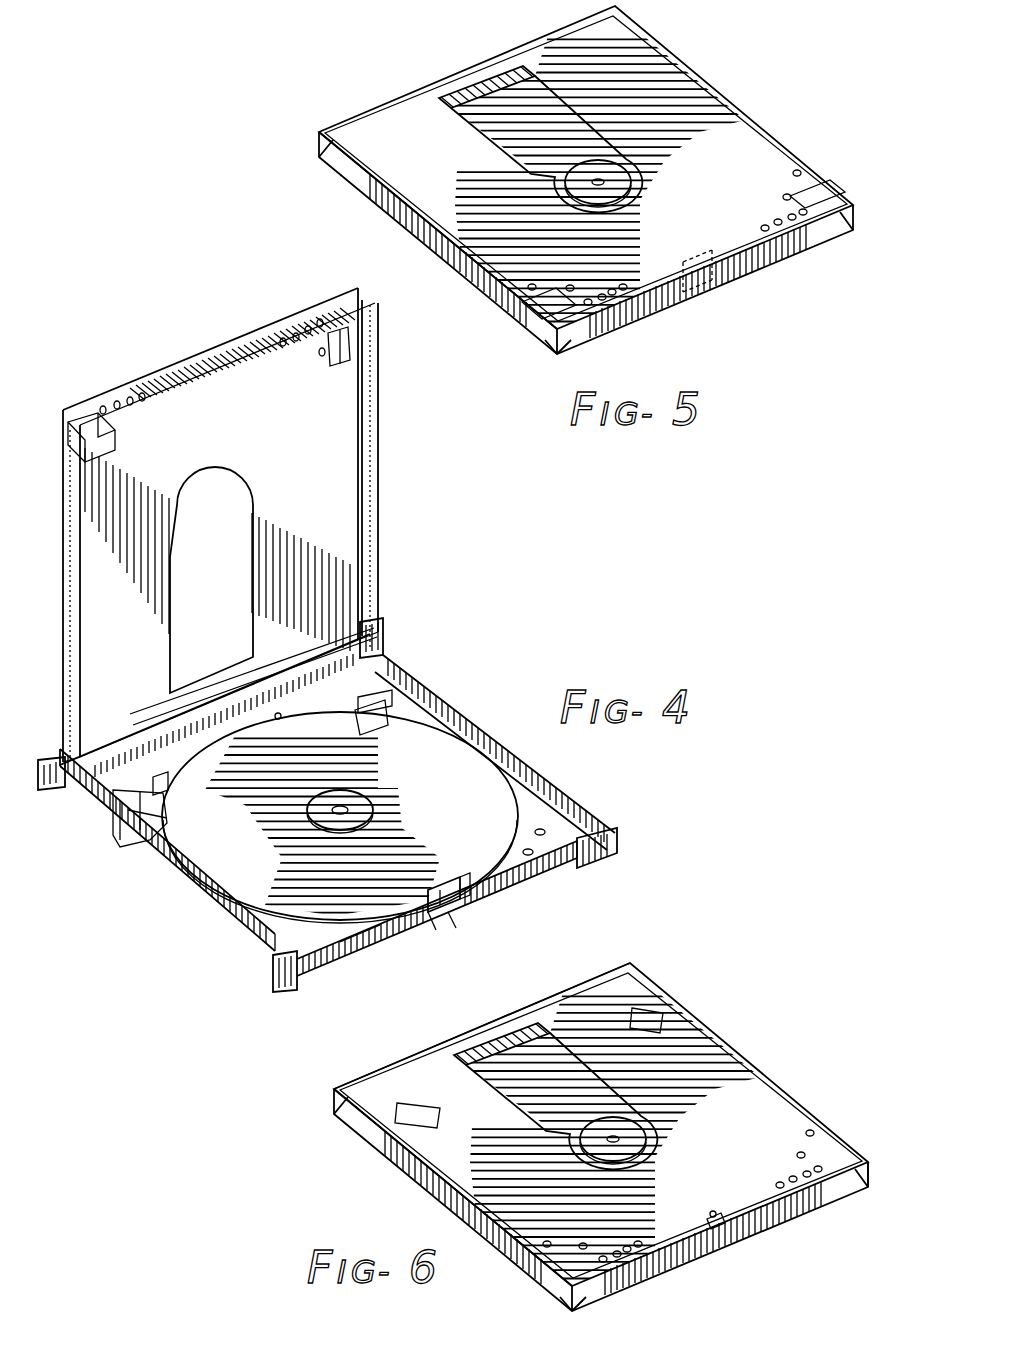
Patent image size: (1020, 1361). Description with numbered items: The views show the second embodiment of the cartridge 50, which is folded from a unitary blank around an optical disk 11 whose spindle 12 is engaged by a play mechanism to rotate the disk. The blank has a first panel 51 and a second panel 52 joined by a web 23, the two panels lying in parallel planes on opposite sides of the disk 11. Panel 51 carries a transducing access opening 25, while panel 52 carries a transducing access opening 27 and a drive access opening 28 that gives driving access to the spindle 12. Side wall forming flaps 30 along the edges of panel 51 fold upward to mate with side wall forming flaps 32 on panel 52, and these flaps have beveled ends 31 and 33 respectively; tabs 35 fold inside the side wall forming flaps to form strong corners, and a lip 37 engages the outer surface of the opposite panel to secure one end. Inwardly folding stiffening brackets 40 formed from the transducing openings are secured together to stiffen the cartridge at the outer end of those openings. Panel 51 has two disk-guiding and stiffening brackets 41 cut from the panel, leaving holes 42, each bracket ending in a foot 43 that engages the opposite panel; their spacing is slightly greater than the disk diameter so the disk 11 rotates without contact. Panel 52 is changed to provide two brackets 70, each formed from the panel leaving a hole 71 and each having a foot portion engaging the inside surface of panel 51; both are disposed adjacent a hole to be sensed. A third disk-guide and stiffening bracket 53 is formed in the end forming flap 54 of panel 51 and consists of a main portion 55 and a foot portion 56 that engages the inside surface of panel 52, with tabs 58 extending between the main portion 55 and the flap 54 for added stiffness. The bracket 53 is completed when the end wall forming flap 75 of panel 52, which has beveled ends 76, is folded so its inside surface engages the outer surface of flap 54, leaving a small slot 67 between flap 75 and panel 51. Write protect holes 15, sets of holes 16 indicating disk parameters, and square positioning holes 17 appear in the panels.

In FIG. 5, the optical disk 11 is at (498, 140).
In FIG. 6, the optical disk 11 is at (561, 1097).
In FIG. 4, the optical disk 11 is at (478, 757).
In FIG. 5, the spindle 12 is at (570, 188).
In FIG. 6, the spindle 12 is at (640, 1138).
In FIG. 4, the spindle 12 is at (312, 818).
In FIG. 5, the write protect holes 15 is at (782, 198).
In FIG. 6, the write protect holes 15 is at (688, 1200).
In FIG. 4, the write protect holes 15 is at (322, 356).
In FIG. 5, the sets of holes 16 is at (757, 228).
In FIG. 6, the sets of holes 16 is at (710, 1214).
In FIG. 4, the sets of holes 16 is at (150, 398).
In FIG. 5, the square holes 17 is at (792, 174).
In FIG. 6, the square holes 17 is at (670, 1183).
In FIG. 4, the square holes 17 is at (546, 830).
In FIG. 4, the web 23 is at (100, 752).
In FIG. 4, the transducing access opening 25 is at (281, 719).
In FIG. 4, the transducing access opening 27 is at (198, 605).
In FIG. 4, the drive access opening 28 is at (203, 522).
In FIG. 4, the side wall forming flaps 30 is at (530, 788).
In FIG. 5, the beveled ends 31 is at (548, 340).
In FIG. 6, the beveled ends 31 is at (428, 1195).
In FIG. 4, the beveled ends 31 is at (598, 826).
In FIG. 6, the side wall forming flaps 32 is at (601, 1124).
In FIG. 4, the side wall forming flaps 32 is at (362, 480).
In FIG. 4, the beveled ends 33 is at (63, 430).
In FIG. 4, the tabs 35 is at (620, 834).
In FIG. 4, the lip 37 is at (385, 640).
In FIG. 5, the stiffening brackets 40 is at (480, 90).
In FIG. 6, the stiffening brackets 40 is at (502, 1018).
In FIG. 4, the stiffening brackets 40 is at (268, 688).
In FIG. 4, the brackets 41 is at (370, 722).
In FIG. 6, the holes 42 is at (529, 1058).
In FIG. 4, the foot 43 is at (360, 703).
In FIG. 5, the cartridge 50 is at (440, 290).
In FIG. 6, the cartridge 50 is at (601, 1120).
In FIG. 4, the cartridge 50 is at (446, 696).
In FIG. 6, the panel 51 is at (482, 1026).
In FIG. 4, the panel 51 is at (118, 832).
In FIG. 5, the panel 52 is at (690, 72).
In FIG. 4, the panel 52 is at (80, 535).
In FIG. 5, the bracket 53 is at (694, 295).
In FIG. 4, the bracket 53 is at (456, 934).
In FIG. 5, the end forming flap 54 is at (560, 352).
In FIG. 6, the end forming flap 54 is at (852, 1200).
In FIG. 4, the end forming flap 54 is at (360, 960).
In FIG. 4, the main portion 55 is at (450, 906).
In FIG. 4, the foot portion 56 is at (448, 890).
In FIG. 4, the tabs 58 is at (466, 900).
In FIG. 6, the small slot 67 is at (725, 1245).
In FIG. 4, the small slot 67 is at (438, 936).
In FIG. 4, the brackets 70 is at (337, 370).
In FIG. 5, the hole 71 is at (808, 192).
In FIG. 5, the end forming flap 75 is at (603, 337).
In FIG. 6, the end forming flap 75 is at (713, 1247).
In FIG. 4, the end forming flap 75 is at (203, 352).
In FIG. 6, the beveled ends 76 is at (594, 1309).
In FIG. 4, the beveled ends 76 is at (63, 405).